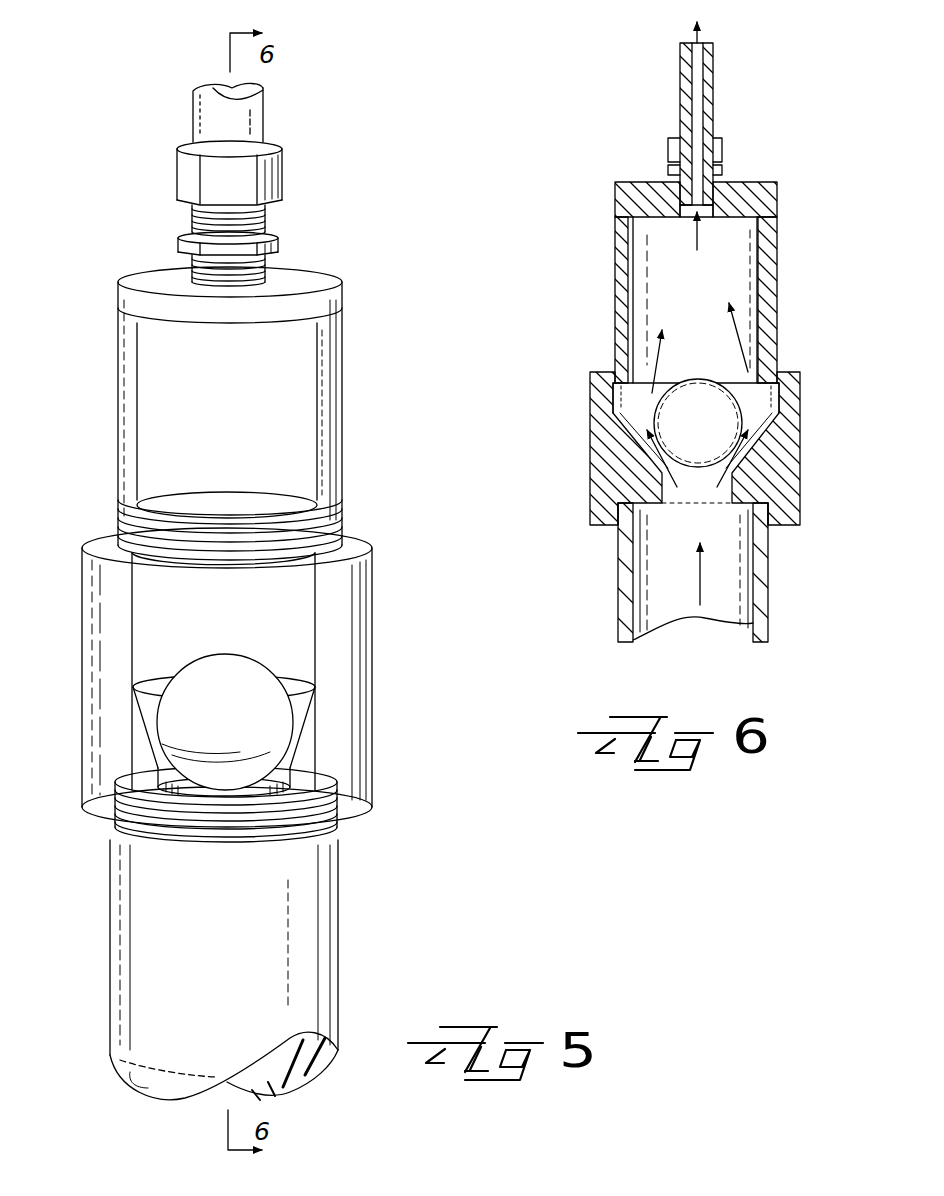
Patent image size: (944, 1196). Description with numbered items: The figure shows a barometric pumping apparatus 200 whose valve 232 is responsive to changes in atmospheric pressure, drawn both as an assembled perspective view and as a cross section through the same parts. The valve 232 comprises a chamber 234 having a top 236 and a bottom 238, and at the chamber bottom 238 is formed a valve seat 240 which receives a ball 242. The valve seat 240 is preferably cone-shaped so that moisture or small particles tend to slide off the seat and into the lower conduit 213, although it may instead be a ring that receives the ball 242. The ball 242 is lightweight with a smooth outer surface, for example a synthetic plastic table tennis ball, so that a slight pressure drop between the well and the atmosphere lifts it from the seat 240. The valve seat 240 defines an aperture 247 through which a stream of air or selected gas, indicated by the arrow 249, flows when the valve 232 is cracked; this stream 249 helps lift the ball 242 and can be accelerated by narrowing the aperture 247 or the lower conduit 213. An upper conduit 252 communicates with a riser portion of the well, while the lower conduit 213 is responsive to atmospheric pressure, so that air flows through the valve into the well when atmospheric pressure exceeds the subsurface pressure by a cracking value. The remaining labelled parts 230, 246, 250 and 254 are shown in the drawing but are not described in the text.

In FIG. 5, the barometric pumping apparatus 200 is at (118, 197).
In FIG. 5, the lower conduit 213 is at (343, 902).
In FIG. 6, the lower conduit 213 is at (768, 607).
In FIG. 5, the check valve 230 is at (108, 824).
In FIG. 5, the valve 232 is at (356, 418).
In FIG. 5, the chamber 234 is at (338, 517).
In FIG. 6, the chamber 234 is at (615, 343).
In FIG. 5, the top 236 is at (342, 330).
In FIG. 6, the top 236 is at (777, 218).
In FIG. 5, the bottom 238 is at (372, 726).
In FIG. 6, the bottom 238 is at (800, 458).
In FIG. 5, the valve seat 240 is at (153, 702).
In FIG. 6, the valve seat 240 is at (613, 405).
In FIG. 5, the ball 242 is at (250, 732).
In FIG. 6, the ball 242 is at (720, 437).
In FIG. 5, the lower threaded portion 246 is at (343, 831).
In FIG. 6, the lower threaded portion 246 is at (800, 525).
In FIG. 5, the aperture 247 is at (262, 787).
In FIG. 6, the aperture 247 is at (697, 497).
In FIG. 6, the air stream 249 is at (755, 340).
In FIG. 5, the end cap 250 is at (150, 277).
In FIG. 6, the end cap 250 is at (633, 185).
In FIG. 5, the upper conduit 252 is at (193, 118).
In FIG. 6, the upper conduit 252 is at (713, 65).
In FIG. 5, the inner chamber 254 is at (298, 387).
In FIG. 6, the inner chamber 254 is at (722, 358).